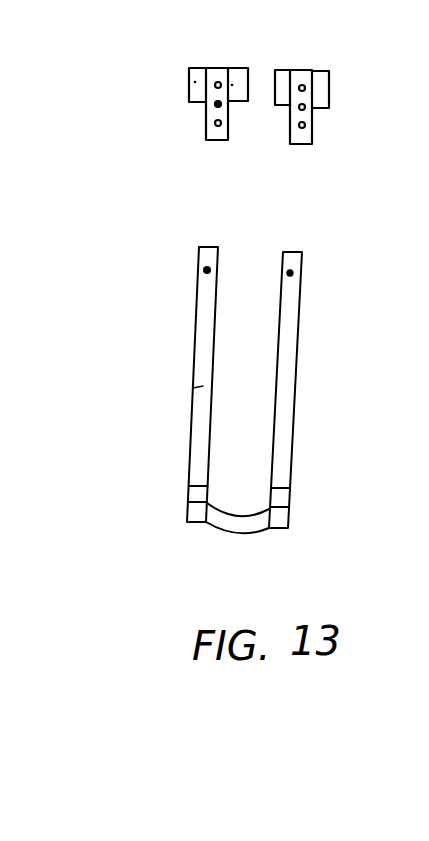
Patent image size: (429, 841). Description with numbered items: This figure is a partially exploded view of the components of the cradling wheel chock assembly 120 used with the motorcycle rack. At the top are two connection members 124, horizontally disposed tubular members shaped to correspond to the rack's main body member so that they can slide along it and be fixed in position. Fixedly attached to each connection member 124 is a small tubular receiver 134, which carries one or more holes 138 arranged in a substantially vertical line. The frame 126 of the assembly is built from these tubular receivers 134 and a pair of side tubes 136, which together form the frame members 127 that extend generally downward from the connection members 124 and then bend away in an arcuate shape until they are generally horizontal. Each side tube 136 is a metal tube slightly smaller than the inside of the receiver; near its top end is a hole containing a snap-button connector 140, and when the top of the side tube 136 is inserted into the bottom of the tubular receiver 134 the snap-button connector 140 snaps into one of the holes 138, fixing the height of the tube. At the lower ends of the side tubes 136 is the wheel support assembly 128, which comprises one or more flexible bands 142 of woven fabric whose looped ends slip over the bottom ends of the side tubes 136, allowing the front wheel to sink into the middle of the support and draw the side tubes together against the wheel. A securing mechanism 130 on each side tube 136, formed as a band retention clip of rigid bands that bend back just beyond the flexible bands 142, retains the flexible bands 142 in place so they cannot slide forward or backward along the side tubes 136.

The cradling wheel chock assembly 120 is at (160, 225).
The connection member 124 is at (200, 61).
The frame 126 is at (188, 342).
The frame member 127 is at (195, 389).
The wheel support assembly 128 is at (250, 502).
The securing mechanism 130 is at (280, 499).
The tubular receiver 134 is at (307, 135).
The side tube 136 is at (293, 308).
The hole 138 is at (213, 124).
The snap-button connector 140 is at (293, 270).
The flexible band 142 is at (240, 523).